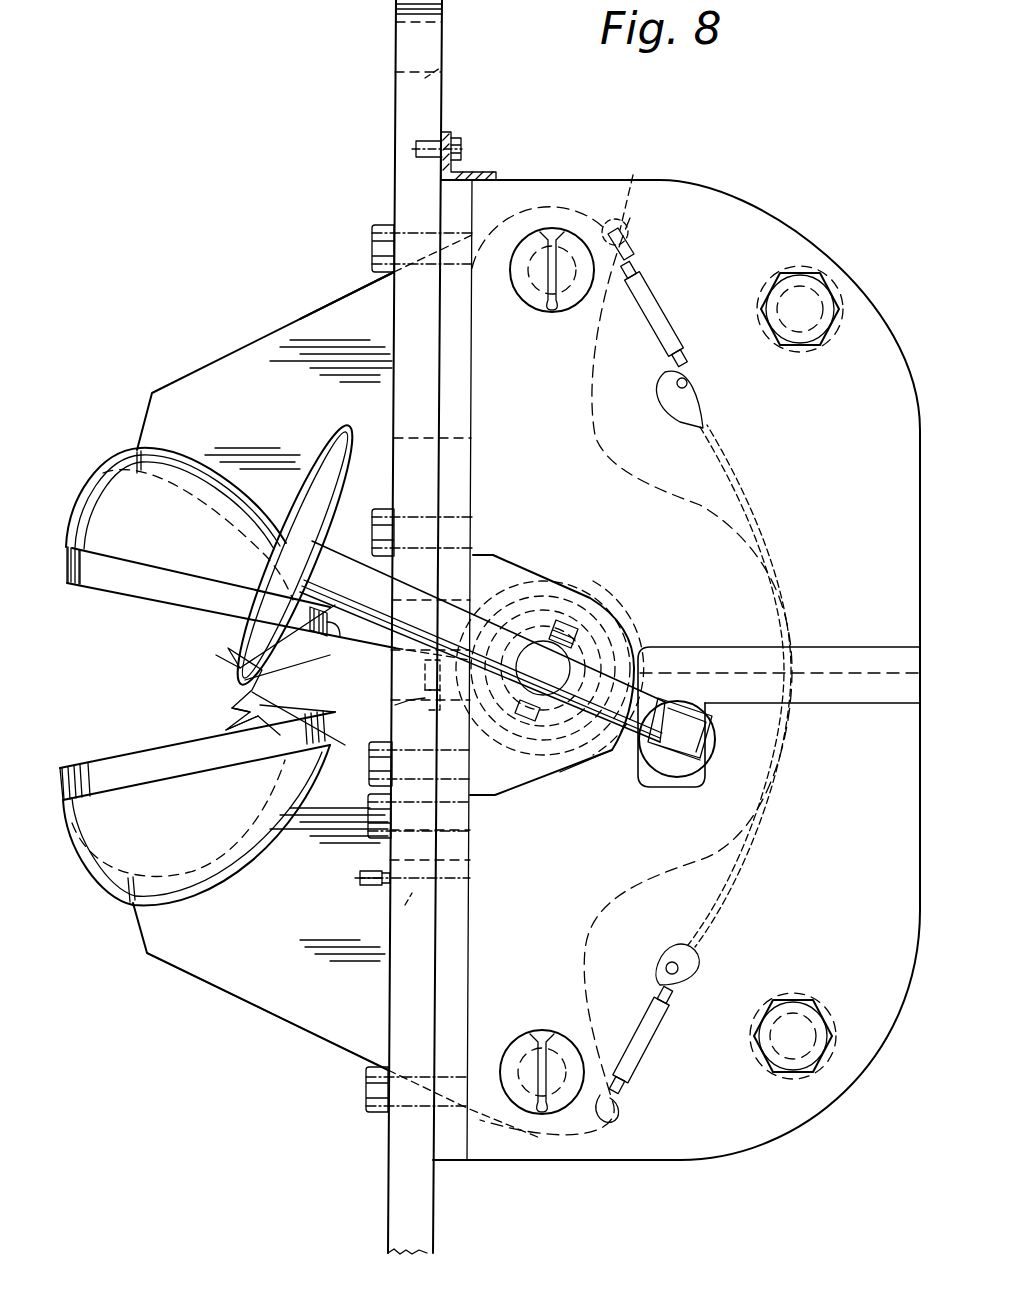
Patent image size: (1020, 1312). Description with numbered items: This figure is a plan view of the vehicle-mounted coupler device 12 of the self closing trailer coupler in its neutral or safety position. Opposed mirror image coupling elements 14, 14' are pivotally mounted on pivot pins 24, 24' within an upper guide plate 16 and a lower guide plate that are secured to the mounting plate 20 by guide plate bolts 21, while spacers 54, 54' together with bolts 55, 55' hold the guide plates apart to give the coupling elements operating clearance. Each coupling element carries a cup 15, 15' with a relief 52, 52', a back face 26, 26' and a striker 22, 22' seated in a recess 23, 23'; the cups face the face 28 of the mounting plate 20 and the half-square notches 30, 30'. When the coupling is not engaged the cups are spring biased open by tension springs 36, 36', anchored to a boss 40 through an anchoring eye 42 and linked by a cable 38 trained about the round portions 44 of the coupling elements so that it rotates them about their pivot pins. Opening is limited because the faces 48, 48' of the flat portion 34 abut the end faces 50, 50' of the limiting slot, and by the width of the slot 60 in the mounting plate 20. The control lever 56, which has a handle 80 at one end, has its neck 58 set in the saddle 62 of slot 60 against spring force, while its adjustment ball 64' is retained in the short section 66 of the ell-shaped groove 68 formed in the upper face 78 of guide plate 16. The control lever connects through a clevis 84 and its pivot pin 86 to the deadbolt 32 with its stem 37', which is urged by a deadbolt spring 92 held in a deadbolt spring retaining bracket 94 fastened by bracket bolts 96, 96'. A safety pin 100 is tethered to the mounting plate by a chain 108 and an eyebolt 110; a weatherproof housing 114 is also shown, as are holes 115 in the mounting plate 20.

The vehicle-mounted coupler device 12 is at (303, 190).
The coupling element 14 is at (265, 370).
The coupling element 14' is at (260, 939).
The cup 15 is at (198, 527).
The cup 15' is at (197, 808).
The guide plate 16 is at (676, 670).
The mounting plate 20 is at (396, 121).
The guide plate bolts 21 is at (372, 240).
The striker 22 is at (280, 675).
The striker 22' is at (241, 710).
The recess for striker 23 is at (198, 534).
The recess for striker 23' is at (178, 818).
The pivot pin 24 is at (542, 277).
The pivot pin 24' is at (542, 1056).
The back face of cup 26 is at (302, 681).
The back face of cup 26' is at (242, 723).
The face of mounting plate 28 is at (394, 672).
The half-square notch 30 is at (418, 672).
The half-square notch 30' is at (418, 692).
The deadbolt 32 is at (625, 638).
The flat portion of coupling element 34 is at (331, 346).
The tension spring 36 is at (653, 323).
The tension spring 36' is at (652, 1033).
The deadbolt stem 37' is at (570, 778).
The cable 38 is at (738, 480).
The boss of coupling element 40 is at (560, 195).
The anchoring eye 42 is at (557, 210).
The round portion of coupling element 44 is at (697, 493).
The face of flat portion 48 is at (347, 294).
The face of flat portion 48' is at (267, 1011).
The end face of slot 50 is at (433, 269).
The end face of slot 50' is at (464, 1085).
The relief in cup 52 is at (86, 520).
The relief in cup 52' is at (74, 837).
The spacer 54 is at (794, 293).
The spacer 54' is at (800, 1023).
The bolt 55 is at (766, 309).
The bolt 55' is at (787, 1009).
The control lever 56 is at (309, 448).
The neck of control lever 58 is at (380, 620).
The slot in mounting plate 60 is at (395, 712).
The saddle portion of slot 62 is at (394, 641).
The ball on control lever 64' is at (701, 737).
The short section of ell-shaped groove 66 is at (640, 772).
The ell-shaped groove 68 is at (852, 647).
The upper face of guide plate 78 is at (870, 800).
The handle 80 is at (248, 635).
The clevis 84 is at (606, 628).
The pivot pin in clevis 86 is at (574, 624).
The deadbolt spring 92 is at (563, 585).
The deadbolt spring retaining bracket 94 is at (518, 565).
The deadbolt spring retaining bracket bolt 96 is at (401, 532).
The deadbolt spring retaining bracket bolt 96' is at (394, 764).
The safety pin 100 is at (380, 868).
The chain 108 is at (378, 888).
The eyebolt 110 is at (358, 879).
The weatherproof housing 114 is at (505, 178).
The holes in mounting plate 115 is at (440, 68).